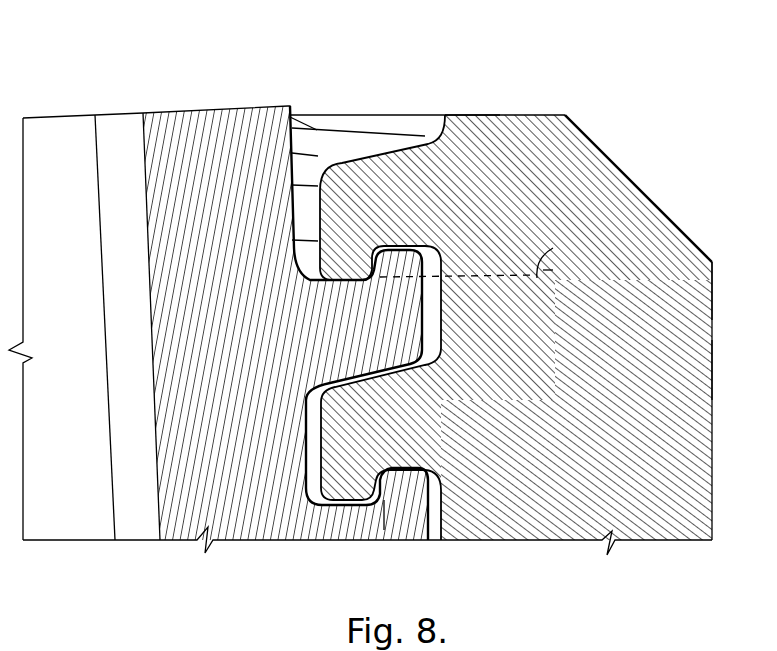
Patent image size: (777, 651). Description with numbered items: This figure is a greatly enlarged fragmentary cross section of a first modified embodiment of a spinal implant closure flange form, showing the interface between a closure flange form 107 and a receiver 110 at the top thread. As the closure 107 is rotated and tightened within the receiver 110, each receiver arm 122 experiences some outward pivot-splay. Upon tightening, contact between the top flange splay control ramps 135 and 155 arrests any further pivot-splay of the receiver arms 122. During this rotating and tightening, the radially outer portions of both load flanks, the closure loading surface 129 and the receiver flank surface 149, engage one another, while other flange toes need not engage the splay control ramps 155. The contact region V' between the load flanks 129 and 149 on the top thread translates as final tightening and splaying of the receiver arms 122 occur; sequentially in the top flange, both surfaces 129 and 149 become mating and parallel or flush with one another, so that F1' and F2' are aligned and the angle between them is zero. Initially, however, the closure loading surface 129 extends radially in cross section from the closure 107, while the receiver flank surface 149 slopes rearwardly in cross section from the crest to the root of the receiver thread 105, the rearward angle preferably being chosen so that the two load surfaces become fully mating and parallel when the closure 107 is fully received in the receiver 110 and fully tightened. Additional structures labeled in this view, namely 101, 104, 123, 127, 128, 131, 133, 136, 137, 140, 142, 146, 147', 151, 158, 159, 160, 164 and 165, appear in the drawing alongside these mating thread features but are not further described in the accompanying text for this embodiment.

The tubular member / pin body 101 is at (538, 100).
The contact region 104 is at (400, 246).
The receiver thread 105 is at (345, 175).
The closure flange form 107 is at (185, 135).
The receiver 110 is at (712, 372).
The receiver arm 122 is at (712, 300).
The end face 123 is at (470, 115).
The tapered transition region 127 is at (347, 193).
The lower corner 128 is at (306, 488).
The closure loading surface 129 is at (348, 507).
The tooth flank 131 is at (420, 311).
The box body wall 133 is at (62, 113).
The top flange splay control ramp 135 is at (384, 492).
The lower tooth base 136 is at (387, 508).
The lower contact surface 137 is at (388, 468).
The lower tooth 140 is at (422, 469).
The tooth root 142 is at (398, 347).
The side wall 146 is at (306, 392).
The clearance gap 147' is at (469, 308).
The receiver flank surface 149 is at (294, 247).
The lower side wall 151 is at (306, 446).
The top flange splay control ramp 155 is at (402, 515).
The upper contact surface 158 is at (402, 247).
The tooth corner 159 is at (441, 262).
The lower tooth corner 160 is at (437, 356).
The inclined surface 164 is at (402, 370).
The inclined flank 165 is at (340, 388).
The contact region V' is at (331, 299).
The alignment line F1' is at (542, 297).
The alignment line F2' is at (553, 251).